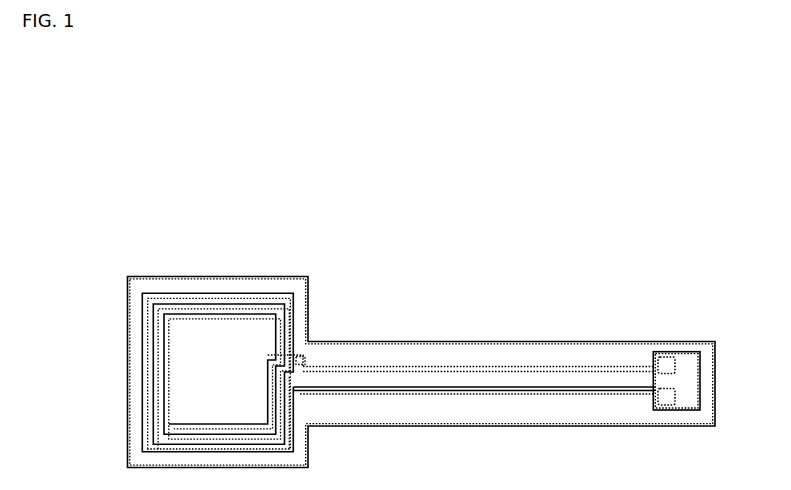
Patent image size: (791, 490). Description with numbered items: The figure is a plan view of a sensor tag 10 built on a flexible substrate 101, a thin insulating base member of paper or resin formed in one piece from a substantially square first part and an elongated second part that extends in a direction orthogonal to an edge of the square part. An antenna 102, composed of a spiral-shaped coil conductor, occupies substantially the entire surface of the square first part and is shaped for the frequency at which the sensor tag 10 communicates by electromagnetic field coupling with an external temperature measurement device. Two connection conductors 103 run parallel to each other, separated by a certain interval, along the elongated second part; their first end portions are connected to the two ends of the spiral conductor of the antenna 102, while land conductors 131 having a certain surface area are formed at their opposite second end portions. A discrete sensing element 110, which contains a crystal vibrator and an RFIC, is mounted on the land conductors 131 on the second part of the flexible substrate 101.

The sensor tag 10 is at (422, 339).
The flexible substrate 101 is at (572, 355).
The antenna 102 is at (252, 292).
The connection conductors 103 is at (481, 391).
The sensing element 110 is at (690, 352).
The land conductors 131 is at (663, 408).